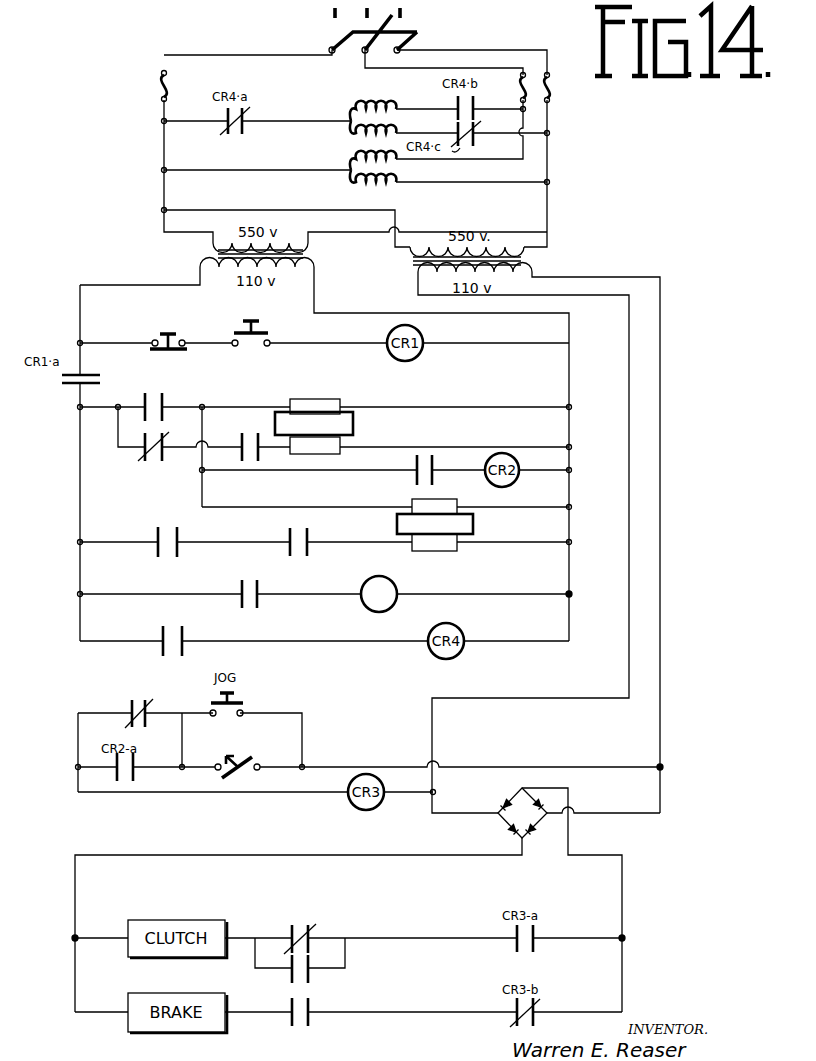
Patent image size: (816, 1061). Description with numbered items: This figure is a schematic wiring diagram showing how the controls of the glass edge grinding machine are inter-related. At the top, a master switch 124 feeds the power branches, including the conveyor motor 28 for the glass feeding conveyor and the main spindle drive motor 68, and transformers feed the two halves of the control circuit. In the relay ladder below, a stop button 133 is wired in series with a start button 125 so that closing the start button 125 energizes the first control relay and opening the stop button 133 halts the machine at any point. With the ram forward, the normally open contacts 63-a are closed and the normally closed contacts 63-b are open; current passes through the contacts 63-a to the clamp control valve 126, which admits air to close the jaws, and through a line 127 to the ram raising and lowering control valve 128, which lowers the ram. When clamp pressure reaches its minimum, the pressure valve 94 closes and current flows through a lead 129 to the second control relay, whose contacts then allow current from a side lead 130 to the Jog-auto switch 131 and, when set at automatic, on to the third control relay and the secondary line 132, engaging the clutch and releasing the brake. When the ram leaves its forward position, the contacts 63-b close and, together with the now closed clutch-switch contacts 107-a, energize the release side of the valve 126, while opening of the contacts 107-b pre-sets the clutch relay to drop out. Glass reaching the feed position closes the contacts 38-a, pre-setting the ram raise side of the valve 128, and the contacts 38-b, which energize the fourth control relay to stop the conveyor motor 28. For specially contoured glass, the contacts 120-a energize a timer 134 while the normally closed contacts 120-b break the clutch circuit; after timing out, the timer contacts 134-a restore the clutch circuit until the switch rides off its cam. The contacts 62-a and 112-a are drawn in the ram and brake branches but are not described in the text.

The master switch 124 is at (412, 24).
The conveyor motor 28 is at (349, 115).
The main spindle drive motor 68 is at (350, 177).
The stop button 133 is at (152, 340).
The start button 125 is at (270, 328).
The control valve for the glass clamping mechanism 126 is at (355, 423).
The lead 129 is at (278, 471).
The pressure valve 94 is at (417, 478).
The line 127 is at (354, 504).
The ram raising and lowering control valve 128 is at (475, 527).
The timer 134 is at (397, 589).
The secondary 110 volt line 132 is at (527, 697).
The side lead 130 is at (376, 766).
The Jog-auto switch 131 is at (244, 775).
The normally open contacts of switch 63 63-a is at (172, 385).
The normally closed contacts of switch 63 63-b is at (171, 451).
The normally open contacts of clutch switch 107 107-a is at (266, 431).
The limit switch contact 62-a is at (187, 519).
The normally open contacts of switch 38 38-a is at (298, 533).
The contacts of switch 120 120-a is at (250, 587).
The normally open contacts of switch 38 38-b is at (192, 619).
The normally closed contacts of clutch switch 107 107-b is at (136, 706).
The normally closed contacts of switch 120 120-b is at (315, 915).
The normally open contacts of timer 134 134-a is at (312, 977).
The limit switch contact 112-a is at (312, 1030).